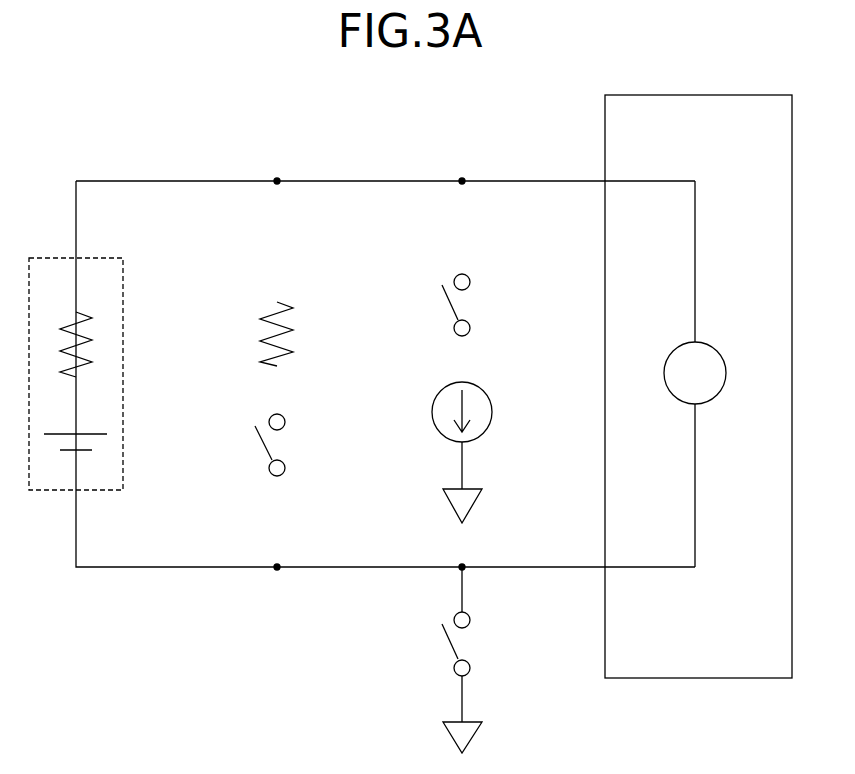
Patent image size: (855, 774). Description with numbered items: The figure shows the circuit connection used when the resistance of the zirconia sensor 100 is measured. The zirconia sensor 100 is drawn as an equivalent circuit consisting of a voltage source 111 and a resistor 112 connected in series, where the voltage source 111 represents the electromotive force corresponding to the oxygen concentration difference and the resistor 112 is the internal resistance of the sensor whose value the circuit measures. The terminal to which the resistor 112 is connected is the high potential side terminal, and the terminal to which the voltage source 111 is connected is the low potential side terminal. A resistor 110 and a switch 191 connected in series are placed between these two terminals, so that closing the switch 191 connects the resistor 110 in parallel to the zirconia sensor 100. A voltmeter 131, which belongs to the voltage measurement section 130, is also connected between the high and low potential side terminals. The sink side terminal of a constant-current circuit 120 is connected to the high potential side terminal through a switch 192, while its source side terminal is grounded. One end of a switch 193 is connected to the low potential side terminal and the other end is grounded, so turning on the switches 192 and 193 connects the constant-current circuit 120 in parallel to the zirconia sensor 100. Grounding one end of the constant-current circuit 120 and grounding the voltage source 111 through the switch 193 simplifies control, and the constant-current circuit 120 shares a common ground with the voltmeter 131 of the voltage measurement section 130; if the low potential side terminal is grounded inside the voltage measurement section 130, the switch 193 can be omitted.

The zirconia sensor 100 is at (117, 258).
The voltage source 111 is at (113, 443).
The resistor 112 is at (113, 339).
The resistor 110 is at (306, 338).
The constant-current circuit 120 is at (494, 406).
The voltage measurement section 130 is at (742, 95).
The voltmeter 131 is at (722, 350).
The switch 191 is at (306, 443).
The switch 192 is at (477, 302).
The switch 193 is at (480, 641).